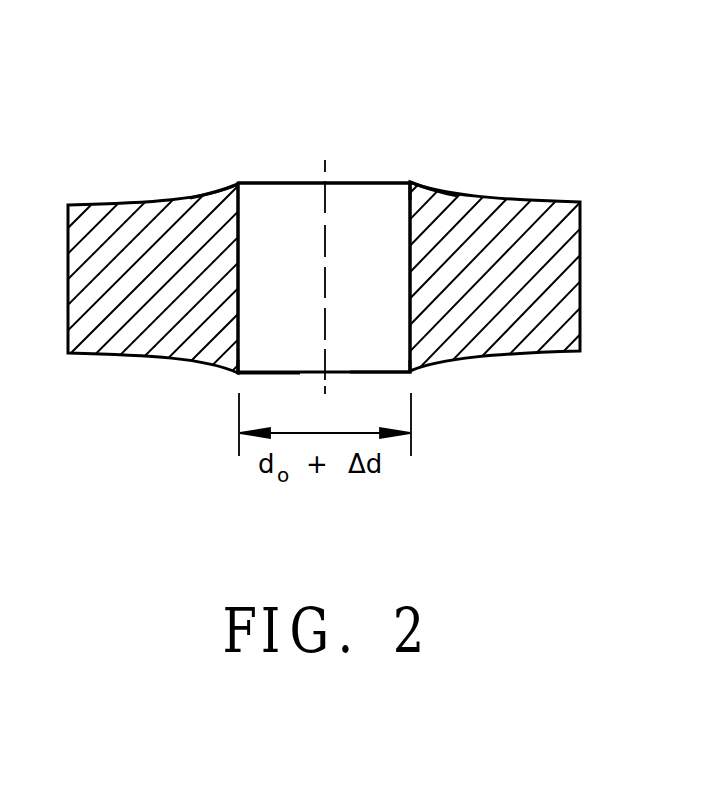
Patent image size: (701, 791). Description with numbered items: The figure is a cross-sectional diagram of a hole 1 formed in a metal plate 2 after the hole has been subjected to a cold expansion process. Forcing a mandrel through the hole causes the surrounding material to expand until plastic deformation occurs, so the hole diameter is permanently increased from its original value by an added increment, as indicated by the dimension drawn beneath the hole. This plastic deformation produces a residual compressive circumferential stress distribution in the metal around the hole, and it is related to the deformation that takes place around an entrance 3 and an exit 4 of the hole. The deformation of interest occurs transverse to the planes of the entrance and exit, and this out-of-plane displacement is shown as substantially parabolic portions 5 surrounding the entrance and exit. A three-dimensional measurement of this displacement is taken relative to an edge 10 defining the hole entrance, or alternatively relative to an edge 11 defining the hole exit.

The hole 1 is at (269, 155).
The metal plate 2 is at (612, 261).
The entrance 3 is at (357, 149).
The exit 4 is at (264, 393).
The substantially parabolic portions 5 is at (191, 159).
The edge 10 is at (426, 151).
The edge 11 is at (435, 395).